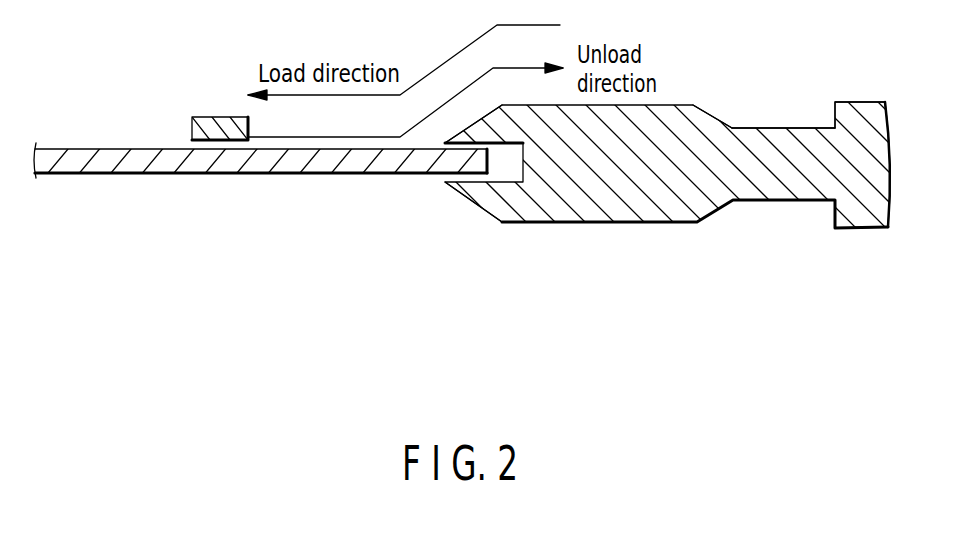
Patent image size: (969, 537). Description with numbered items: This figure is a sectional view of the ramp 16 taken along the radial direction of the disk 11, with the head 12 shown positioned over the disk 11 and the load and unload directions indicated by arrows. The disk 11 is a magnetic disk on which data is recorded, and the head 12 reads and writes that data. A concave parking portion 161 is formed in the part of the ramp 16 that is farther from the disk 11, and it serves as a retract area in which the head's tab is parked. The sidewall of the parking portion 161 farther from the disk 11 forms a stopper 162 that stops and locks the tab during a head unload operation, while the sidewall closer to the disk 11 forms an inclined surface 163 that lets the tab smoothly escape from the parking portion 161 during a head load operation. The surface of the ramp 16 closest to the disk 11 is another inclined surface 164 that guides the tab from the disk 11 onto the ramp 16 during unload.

The disk 11 is at (155, 176).
The head 12 is at (203, 115).
The ramp 16 is at (584, 231).
The parking portion 161 is at (773, 122).
The stopper 162 is at (826, 122).
The inclined surface 163 is at (718, 122).
The inclined surface 164 is at (470, 132).